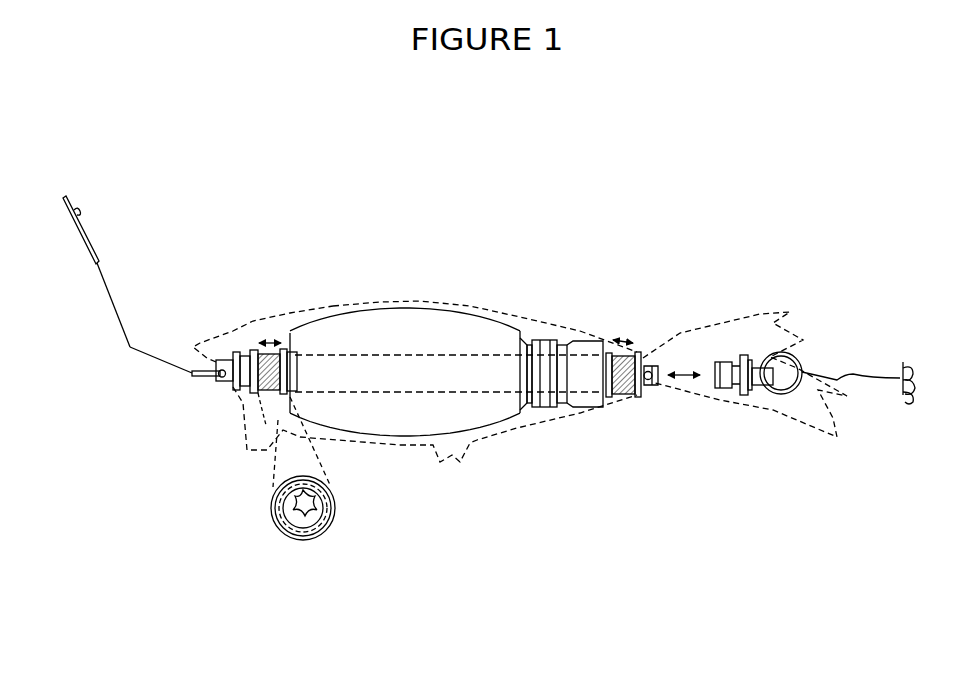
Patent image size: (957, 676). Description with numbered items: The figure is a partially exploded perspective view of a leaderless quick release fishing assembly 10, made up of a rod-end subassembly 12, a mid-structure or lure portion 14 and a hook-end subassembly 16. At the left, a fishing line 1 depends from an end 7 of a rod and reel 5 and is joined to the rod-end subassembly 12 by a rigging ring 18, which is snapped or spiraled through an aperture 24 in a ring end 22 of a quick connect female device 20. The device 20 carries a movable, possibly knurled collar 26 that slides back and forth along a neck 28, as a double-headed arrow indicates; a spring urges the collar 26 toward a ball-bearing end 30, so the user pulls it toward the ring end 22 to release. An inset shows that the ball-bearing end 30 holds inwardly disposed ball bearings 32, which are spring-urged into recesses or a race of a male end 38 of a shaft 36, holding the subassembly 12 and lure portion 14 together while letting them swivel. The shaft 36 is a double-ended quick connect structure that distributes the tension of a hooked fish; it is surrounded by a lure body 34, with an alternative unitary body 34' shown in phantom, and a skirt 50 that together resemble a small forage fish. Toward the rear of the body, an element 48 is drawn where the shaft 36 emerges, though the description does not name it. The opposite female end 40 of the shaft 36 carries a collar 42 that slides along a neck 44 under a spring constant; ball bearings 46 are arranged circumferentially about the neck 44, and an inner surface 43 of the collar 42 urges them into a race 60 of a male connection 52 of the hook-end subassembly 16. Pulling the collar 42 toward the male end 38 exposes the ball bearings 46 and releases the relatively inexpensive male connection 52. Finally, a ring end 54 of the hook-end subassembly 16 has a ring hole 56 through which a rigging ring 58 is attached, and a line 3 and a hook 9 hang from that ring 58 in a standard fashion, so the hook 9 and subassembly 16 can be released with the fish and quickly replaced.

The fishing leader or line 1 is at (153, 354).
The line 3 is at (853, 373).
The rod and reel 5 is at (102, 249).
The end of rod and reel 7 is at (130, 348).
The hook 9 is at (913, 366).
The leaderless quick release fishing assembly 10 is at (621, 236).
The rod-end subassembly 12 is at (229, 429).
The lure portion 14 is at (420, 299).
The hook-end subassembly 16 is at (728, 407).
The rigging ring 18 is at (195, 378).
The quick connect female device 20 is at (249, 349).
The ring end 22 is at (218, 385).
The aperture 24 is at (236, 352).
The collar 26 is at (273, 397).
The neck 28 is at (244, 393).
The ball-bearing end 30 is at (297, 352).
The ball bearings 32 is at (311, 509).
The fishing lure body 34 is at (405, 372).
The alternative body 34' is at (518, 446).
The shaft 36 is at (393, 353).
The male end 38 is at (284, 372).
The female end 40 is at (649, 398).
The collar 42 is at (626, 398).
The inner surface of collar 43 is at (646, 353).
The neck 44 is at (658, 384).
The ball bearings 46 is at (657, 365).
The collar 48 is at (566, 412).
The skirt 50 is at (680, 333).
The male connection 52 is at (714, 368).
The ring end 54 is at (762, 376).
The ring hole 56 is at (755, 393).
The rigging ring 58 is at (780, 397).
The race 60 is at (737, 362).